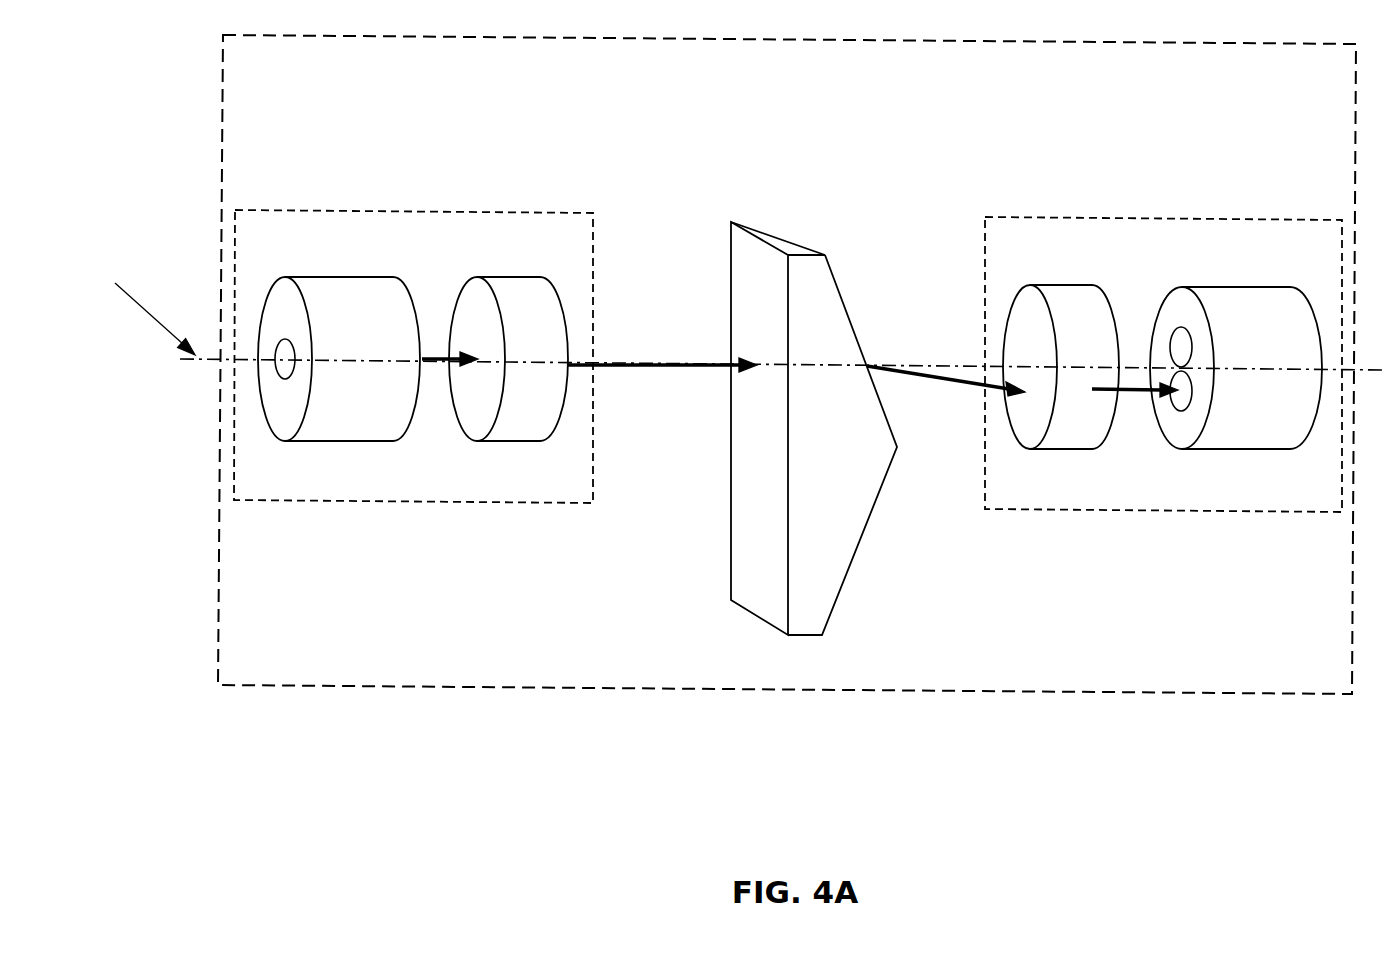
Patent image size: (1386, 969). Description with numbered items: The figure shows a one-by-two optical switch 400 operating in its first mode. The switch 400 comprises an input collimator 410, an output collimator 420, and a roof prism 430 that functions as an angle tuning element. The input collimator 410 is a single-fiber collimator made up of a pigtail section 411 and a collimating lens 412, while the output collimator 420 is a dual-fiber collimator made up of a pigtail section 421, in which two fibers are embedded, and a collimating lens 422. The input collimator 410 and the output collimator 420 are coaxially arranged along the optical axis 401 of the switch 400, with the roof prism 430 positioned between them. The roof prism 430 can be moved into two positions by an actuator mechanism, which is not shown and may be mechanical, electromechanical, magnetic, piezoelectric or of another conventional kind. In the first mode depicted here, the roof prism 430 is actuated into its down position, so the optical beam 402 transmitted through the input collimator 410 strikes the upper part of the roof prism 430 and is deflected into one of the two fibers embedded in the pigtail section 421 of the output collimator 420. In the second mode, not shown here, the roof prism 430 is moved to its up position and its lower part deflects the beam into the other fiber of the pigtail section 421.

The optical switch 400 is at (1218, 694).
The optical axis 401 is at (131, 299).
The light beam 402 is at (635, 382).
The input collimator 410 is at (390, 502).
The pigtail section 411 is at (340, 277).
The collimating lens 412 is at (510, 277).
The output collimator 420 is at (1193, 511).
The pigtail section 421 is at (1225, 287).
The collimating lens 422 is at (1050, 285).
The roof prism 430 is at (773, 235).